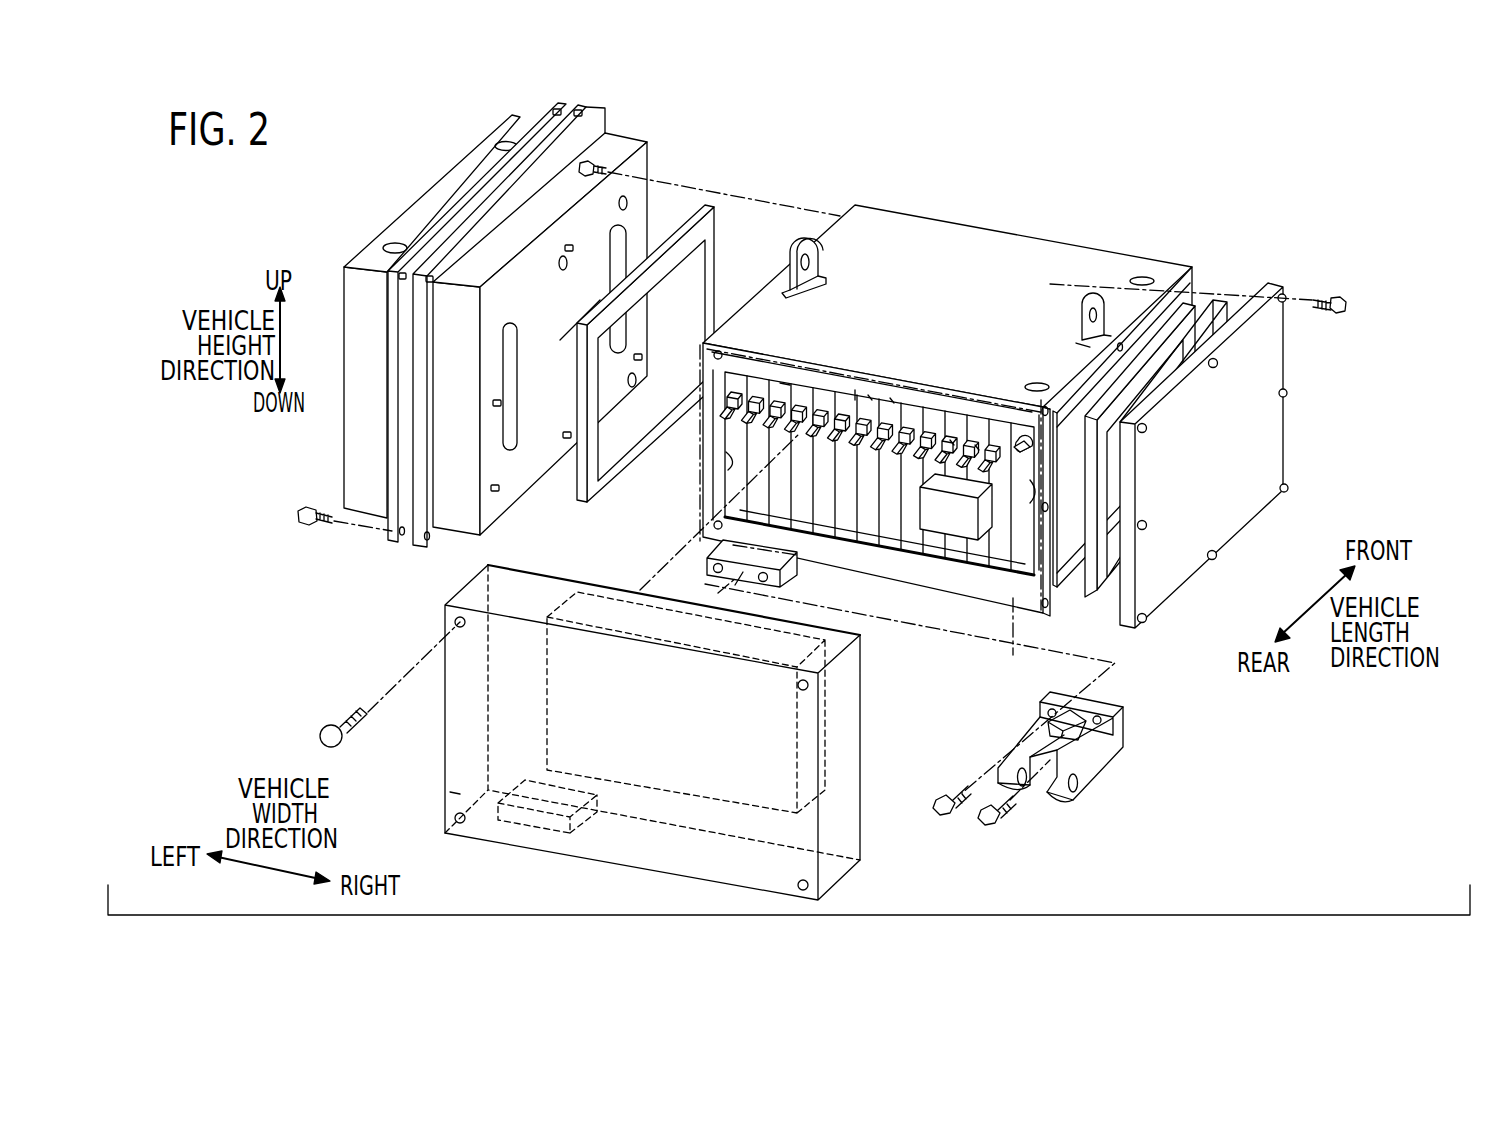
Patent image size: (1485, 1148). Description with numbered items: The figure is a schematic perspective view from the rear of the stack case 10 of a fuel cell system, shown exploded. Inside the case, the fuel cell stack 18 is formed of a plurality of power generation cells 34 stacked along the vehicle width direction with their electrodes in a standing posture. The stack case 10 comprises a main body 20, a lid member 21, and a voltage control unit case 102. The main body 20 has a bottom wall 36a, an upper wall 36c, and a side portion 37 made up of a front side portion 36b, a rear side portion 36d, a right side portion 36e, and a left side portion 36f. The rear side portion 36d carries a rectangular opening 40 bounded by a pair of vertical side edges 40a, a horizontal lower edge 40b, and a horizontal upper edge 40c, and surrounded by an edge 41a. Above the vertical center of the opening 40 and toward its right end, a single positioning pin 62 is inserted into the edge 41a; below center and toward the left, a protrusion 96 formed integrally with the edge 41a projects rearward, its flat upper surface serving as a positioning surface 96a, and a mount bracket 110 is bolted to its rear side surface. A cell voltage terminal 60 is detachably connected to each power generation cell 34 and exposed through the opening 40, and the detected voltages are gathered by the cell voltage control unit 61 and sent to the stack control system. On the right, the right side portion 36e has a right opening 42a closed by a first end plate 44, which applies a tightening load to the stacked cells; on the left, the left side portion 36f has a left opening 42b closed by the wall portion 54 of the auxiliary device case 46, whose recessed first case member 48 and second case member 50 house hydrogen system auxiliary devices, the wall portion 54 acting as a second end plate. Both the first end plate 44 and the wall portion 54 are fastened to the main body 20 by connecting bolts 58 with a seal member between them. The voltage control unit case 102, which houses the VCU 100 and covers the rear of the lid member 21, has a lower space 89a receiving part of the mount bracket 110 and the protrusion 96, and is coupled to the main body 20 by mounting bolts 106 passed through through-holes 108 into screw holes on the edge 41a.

The stack case 10 is at (1192, 212).
The fuel cell stack 18 is at (760, 390).
The main body 20 is at (916, 405).
The lid member 21 is at (1014, 644).
The power generation cell 34 is at (893, 405).
The bottom wall 36a is at (922, 586).
The front side portion 36b is at (947, 217).
The upper wall 36c is at (893, 232).
The rear side portion 36d is at (713, 500).
The right side portion 36e is at (1067, 573).
The left side portion 36f is at (762, 290).
The side portion 37 is at (1046, 408).
The opening 40 is at (818, 390).
The side edge 40a is at (733, 460).
The lower edge 40b is at (863, 527).
The upper edge 40c is at (783, 385).
The edge 41a is at (855, 390).
The right opening 42a is at (1132, 351).
The left opening 42b is at (808, 237).
The first end plate 44 is at (1260, 438).
The auxiliary device case 46 is at (495, 316).
The first case member 48 is at (560, 183).
The second case member 50 is at (515, 127).
The wall portion 54 is at (523, 470).
The connecting bolt 58 is at (600, 160).
The cell voltage terminal 60 is at (977, 445).
The cell voltage control unit 61 is at (947, 540).
The positioning pin 62 is at (1024, 435).
The space 89a is at (520, 783).
The protrusion 96 is at (705, 556).
The positioning surface 96a is at (730, 546).
The VCU 100 is at (651, 732).
The voltage control unit case 102 is at (455, 790).
The mounting bolt 106 is at (320, 733).
The through-hole 108 is at (452, 622).
The mount bracket 110 is at (1097, 763).